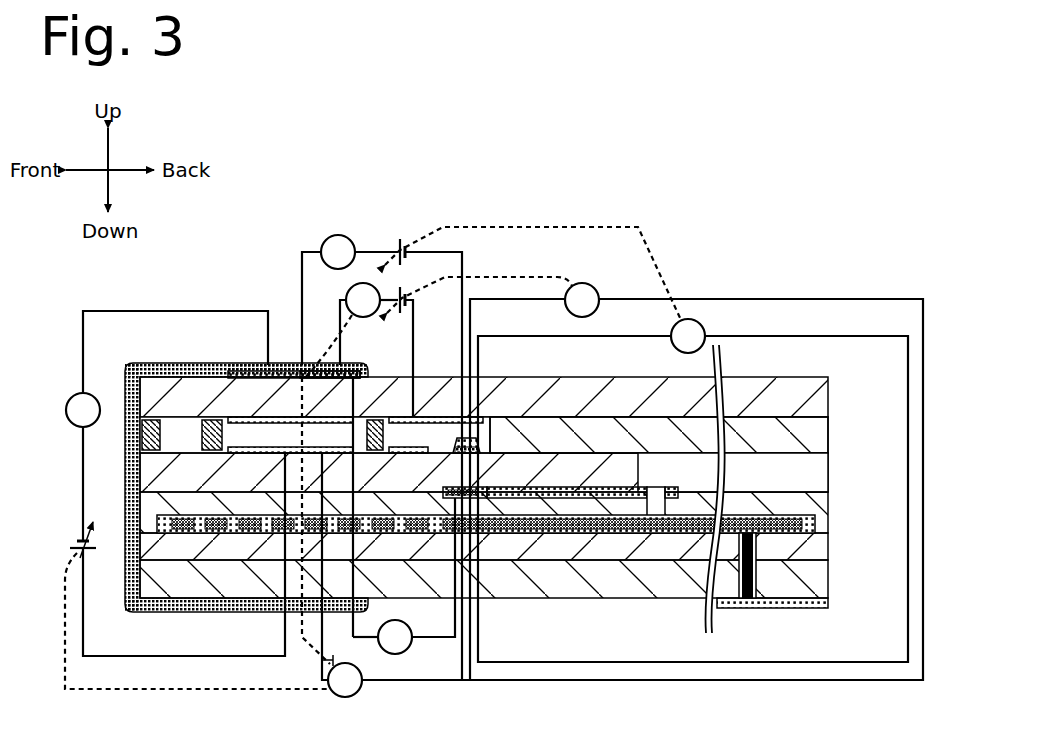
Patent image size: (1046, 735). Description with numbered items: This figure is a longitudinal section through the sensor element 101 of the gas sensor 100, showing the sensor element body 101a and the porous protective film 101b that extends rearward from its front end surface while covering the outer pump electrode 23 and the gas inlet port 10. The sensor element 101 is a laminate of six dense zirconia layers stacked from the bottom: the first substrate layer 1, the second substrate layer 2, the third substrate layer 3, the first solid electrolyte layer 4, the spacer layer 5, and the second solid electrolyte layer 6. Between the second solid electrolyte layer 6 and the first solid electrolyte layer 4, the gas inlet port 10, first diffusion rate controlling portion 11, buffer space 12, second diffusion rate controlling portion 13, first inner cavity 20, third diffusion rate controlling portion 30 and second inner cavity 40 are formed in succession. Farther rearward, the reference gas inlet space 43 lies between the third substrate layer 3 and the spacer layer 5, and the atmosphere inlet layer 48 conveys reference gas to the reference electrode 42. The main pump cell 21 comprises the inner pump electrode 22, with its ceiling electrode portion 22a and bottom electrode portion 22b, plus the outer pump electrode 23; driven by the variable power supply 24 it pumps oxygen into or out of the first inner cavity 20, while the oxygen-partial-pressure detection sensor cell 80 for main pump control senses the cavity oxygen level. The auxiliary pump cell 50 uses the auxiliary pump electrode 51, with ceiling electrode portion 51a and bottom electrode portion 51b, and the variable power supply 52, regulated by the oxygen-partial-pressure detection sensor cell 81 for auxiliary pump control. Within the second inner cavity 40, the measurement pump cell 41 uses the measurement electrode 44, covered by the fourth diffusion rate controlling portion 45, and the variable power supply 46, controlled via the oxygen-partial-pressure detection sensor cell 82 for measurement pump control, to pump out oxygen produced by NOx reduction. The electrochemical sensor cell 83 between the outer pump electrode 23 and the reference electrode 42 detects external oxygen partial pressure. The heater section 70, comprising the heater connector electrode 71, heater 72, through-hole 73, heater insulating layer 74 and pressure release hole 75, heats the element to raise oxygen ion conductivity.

The first substrate layer 1 is at (828, 576).
The second substrate layer 2 is at (828, 546).
The third substrate layer 3 is at (828, 509).
The first solid electrolyte layer 4 is at (146, 469).
The spacer layer 5 is at (828, 421).
The second solid electrolyte layer 6 is at (828, 396).
The gas inlet port 10 is at (141, 437).
The first diffusion rate controlling portion 11 is at (150, 421).
The buffer space 12 is at (192, 421).
The second diffusion rate controlling portion 13 is at (213, 421).
The first inner cavity 20 is at (331, 433).
The main pump cell 21 is at (178, 311).
The inner pump electrode 22 is at (285, 371).
The ceiling electrode portion 22a is at (306, 375).
The bottom electrode portion 22b is at (279, 453).
The outer pump electrode 23 is at (245, 366).
The variable power supply 24 is at (70, 548).
The third diffusion rate controlling portion 30 is at (372, 419).
The second inner cavity 40 is at (398, 376).
The measurement pump cell 41 is at (324, 240).
The reference electrode 42 is at (480, 488).
The reference gas inlet space 43 is at (822, 478).
The measurement electrode 44 is at (470, 455).
The fourth diffusion rate controlling portion 45 is at (456, 444).
The variable power supply 46 is at (403, 238).
The atmosphere inlet layer 48 is at (642, 488).
The auxiliary pump cell 50 is at (345, 297).
The auxiliary pump electrode 51 is at (456, 377).
The ceiling electrode portion 51a is at (489, 417).
The bottom electrode portion 51b is at (393, 455).
The variable power supply 52 is at (403, 314).
The heater section 70 is at (521, 583).
The heater connector electrode 71 is at (828, 604).
The heater 72 is at (188, 522).
The through-hole 73 is at (748, 600).
The heater insulating layer 74 is at (163, 524).
The pressure release hole 75 is at (674, 488).
The oxygen-partial-pressure detection sensor cell for main pump control 80 is at (383, 690).
The oxygen-partial-pressure detection sensor cell for auxiliary pump control 81 is at (737, 293).
The oxygen-partial-pressure detection sensor cell for measurement pump control 82 is at (740, 331).
The electrochemical sensor cell 83 is at (418, 642).
The gas sensor 100 is at (821, 158).
The sensor element 101 is at (733, 201).
The sensor element body 101a is at (797, 348).
The porous protective film 101b is at (257, 373).